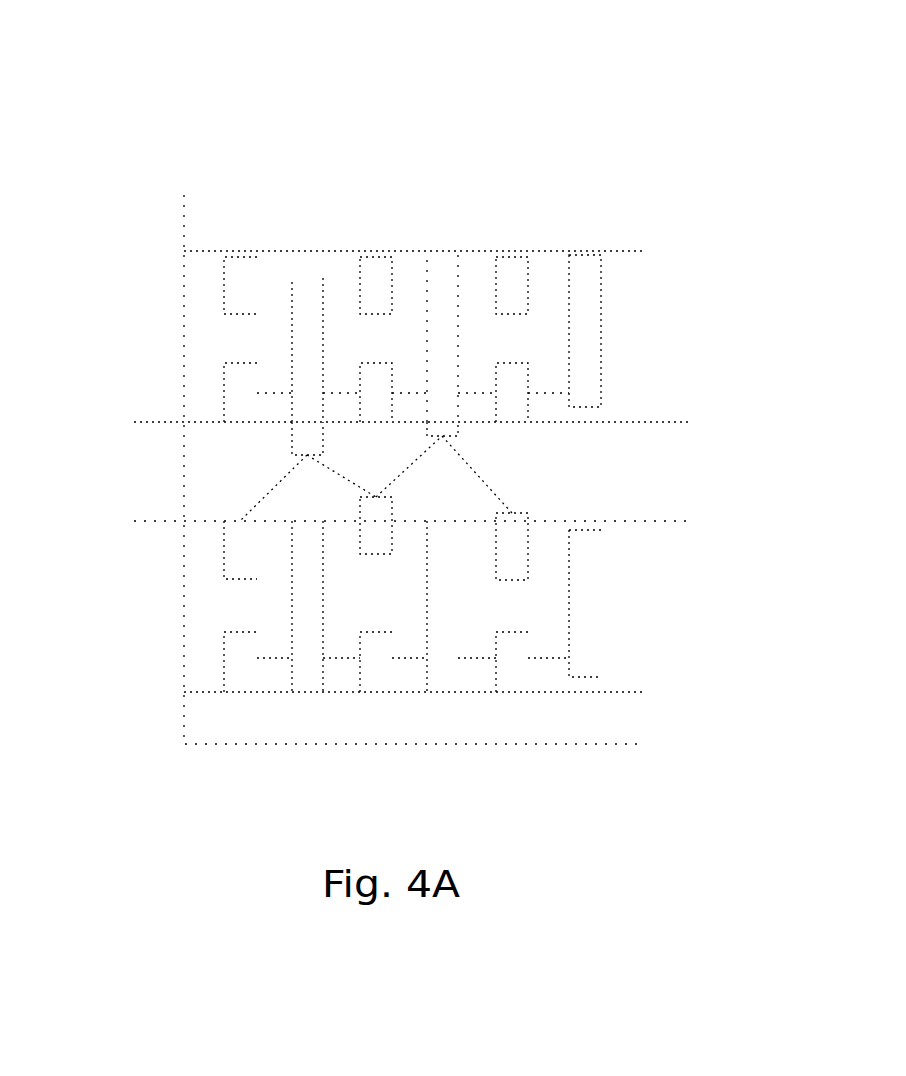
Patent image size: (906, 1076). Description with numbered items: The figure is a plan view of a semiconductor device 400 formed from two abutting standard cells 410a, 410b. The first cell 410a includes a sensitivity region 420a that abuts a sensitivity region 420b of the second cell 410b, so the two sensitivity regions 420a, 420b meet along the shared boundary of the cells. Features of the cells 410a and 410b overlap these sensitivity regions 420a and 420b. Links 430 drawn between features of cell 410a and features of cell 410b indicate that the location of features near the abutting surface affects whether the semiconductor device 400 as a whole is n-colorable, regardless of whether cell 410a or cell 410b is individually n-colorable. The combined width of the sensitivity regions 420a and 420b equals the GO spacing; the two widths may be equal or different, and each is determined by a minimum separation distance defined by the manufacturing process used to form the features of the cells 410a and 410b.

The semiconductor device 400 is at (146, 122).
The standard cell 410a is at (184, 313).
The standard cell 410b is at (184, 618).
The sensitivity region 420a is at (193, 443).
The sensitivity region 420b is at (193, 493).
The links 430 is at (513, 448).